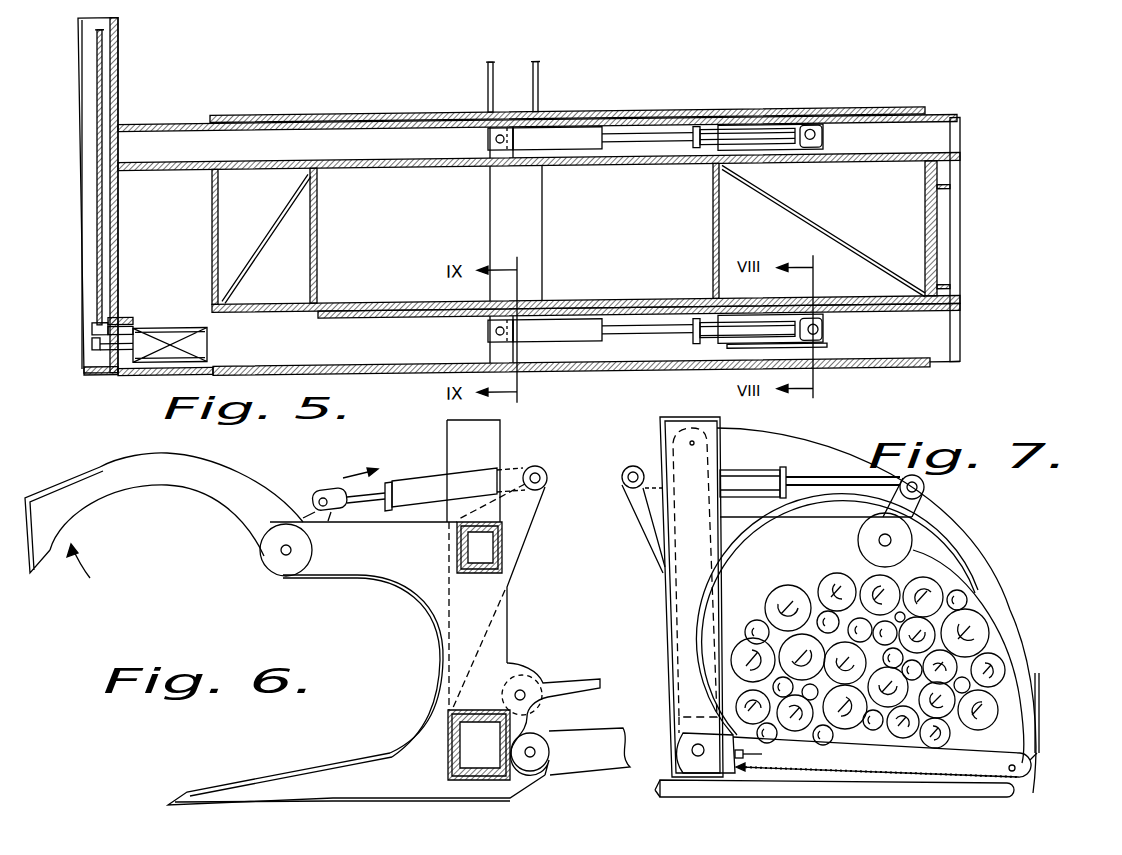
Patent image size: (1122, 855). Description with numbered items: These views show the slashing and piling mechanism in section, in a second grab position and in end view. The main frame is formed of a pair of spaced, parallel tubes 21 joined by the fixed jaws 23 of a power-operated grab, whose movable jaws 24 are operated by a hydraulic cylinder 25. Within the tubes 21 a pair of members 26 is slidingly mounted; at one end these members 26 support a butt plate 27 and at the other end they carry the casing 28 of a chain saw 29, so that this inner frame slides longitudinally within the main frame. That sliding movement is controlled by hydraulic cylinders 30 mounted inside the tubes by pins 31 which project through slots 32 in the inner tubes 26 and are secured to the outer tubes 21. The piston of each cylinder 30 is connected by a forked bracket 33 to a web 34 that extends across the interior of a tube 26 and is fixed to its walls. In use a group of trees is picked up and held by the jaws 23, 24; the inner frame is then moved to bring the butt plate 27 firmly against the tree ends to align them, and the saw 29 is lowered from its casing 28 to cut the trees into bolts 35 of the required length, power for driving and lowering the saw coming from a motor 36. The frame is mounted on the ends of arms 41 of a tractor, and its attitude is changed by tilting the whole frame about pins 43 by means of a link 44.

In FIG. 5, the tubes 21 is at (575, 113).
In FIG. 6, the tubes 21 is at (505, 524).
In FIG. 6, the fixed jaws 23 is at (318, 768).
In FIG. 7, the fixed jaws 23 is at (1020, 788).
In FIG. 6, the movable jaws 24 is at (130, 483).
In FIG. 7, the movable jaws 24 is at (985, 573).
In FIG. 6, the hydraulic cylinder 25 is at (408, 487).
In FIG. 7, the hydraulic cylinder 25 is at (772, 470).
In FIG. 5, the members 26 is at (358, 138).
In FIG. 6, the members 26 is at (497, 555).
In FIG. 5, the butt plate 27 is at (937, 250).
In FIG. 5, the casing 28 is at (118, 61).
In FIG. 7, the casing 28 is at (670, 607).
In FIG. 5, the chain saw 29 is at (97, 113).
In FIG. 7, the chain saw 29 is at (973, 760).
In FIG. 5, the hydraulic cylinders 30 is at (711, 140).
In FIG. 5, the pins 31 is at (816, 340).
In FIG. 5, the slots 32 is at (700, 367).
In FIG. 5, the forked bracket 33 is at (565, 328).
In FIG. 5, the web 34 is at (498, 352).
In FIG. 7, the bolts 35 is at (992, 668).
In FIG. 5, the motor 36 is at (165, 328).
In FIG. 6, the arms 41 is at (577, 758).
In FIG. 6, the pins 43 is at (538, 748).
In FIG. 6, the link 44 is at (582, 684).